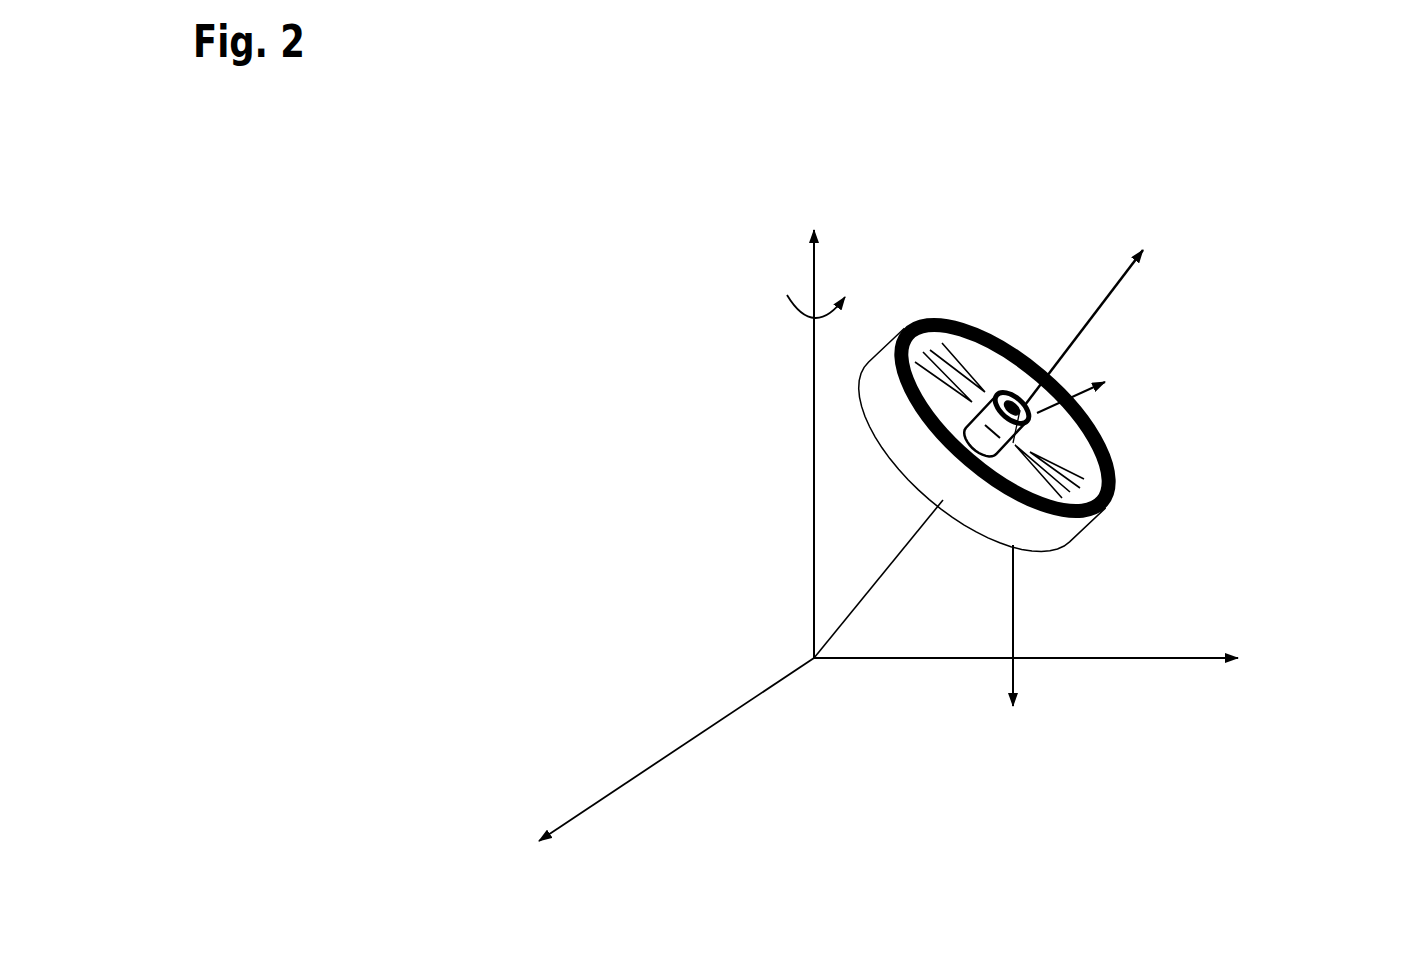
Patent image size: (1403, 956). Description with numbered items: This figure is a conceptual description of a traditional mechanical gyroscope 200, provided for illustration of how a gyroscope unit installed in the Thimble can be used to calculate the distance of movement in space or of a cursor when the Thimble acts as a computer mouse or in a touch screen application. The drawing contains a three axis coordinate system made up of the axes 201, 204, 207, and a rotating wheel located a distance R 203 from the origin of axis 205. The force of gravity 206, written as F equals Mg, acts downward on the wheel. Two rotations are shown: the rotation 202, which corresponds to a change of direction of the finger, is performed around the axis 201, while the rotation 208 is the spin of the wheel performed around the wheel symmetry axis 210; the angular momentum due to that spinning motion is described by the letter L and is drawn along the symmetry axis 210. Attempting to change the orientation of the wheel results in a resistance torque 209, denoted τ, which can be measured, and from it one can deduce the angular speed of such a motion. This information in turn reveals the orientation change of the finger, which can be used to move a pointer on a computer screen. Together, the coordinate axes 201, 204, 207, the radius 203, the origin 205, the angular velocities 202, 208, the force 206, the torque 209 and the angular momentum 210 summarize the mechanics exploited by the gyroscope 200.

The mechanical gyroscope 200 is at (570, 235).
The axis 201 is at (795, 218).
The rotation (angular velocity) 202 is at (857, 258).
The distance R 203 is at (842, 533).
The axis 204 is at (543, 805).
The origin of axis 205 is at (832, 720).
The force of gravity 206 is at (1012, 763).
The axis 207 is at (1248, 638).
The rotation (angular velocity) 208 is at (1163, 497).
The torque 209 is at (1138, 370).
The wheel symmetry axis (angular momentum) 210 is at (1150, 230).